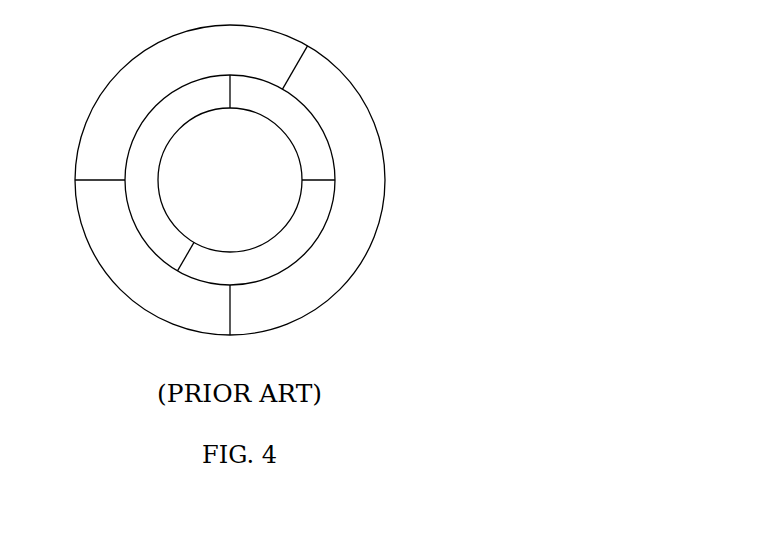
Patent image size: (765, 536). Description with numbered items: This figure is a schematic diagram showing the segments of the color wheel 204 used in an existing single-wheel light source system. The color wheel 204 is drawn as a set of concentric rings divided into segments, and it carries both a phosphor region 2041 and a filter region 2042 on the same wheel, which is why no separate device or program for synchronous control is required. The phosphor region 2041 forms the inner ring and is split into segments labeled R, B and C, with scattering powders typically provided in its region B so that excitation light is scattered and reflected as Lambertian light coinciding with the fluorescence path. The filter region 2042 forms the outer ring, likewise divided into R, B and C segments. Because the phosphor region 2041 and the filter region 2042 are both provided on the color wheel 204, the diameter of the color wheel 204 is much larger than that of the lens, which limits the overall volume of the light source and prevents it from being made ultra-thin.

The color wheel 204 is at (245, 170).
The phosphor region 2041 is at (320, 155).
The filter region 2042 is at (165, 63).